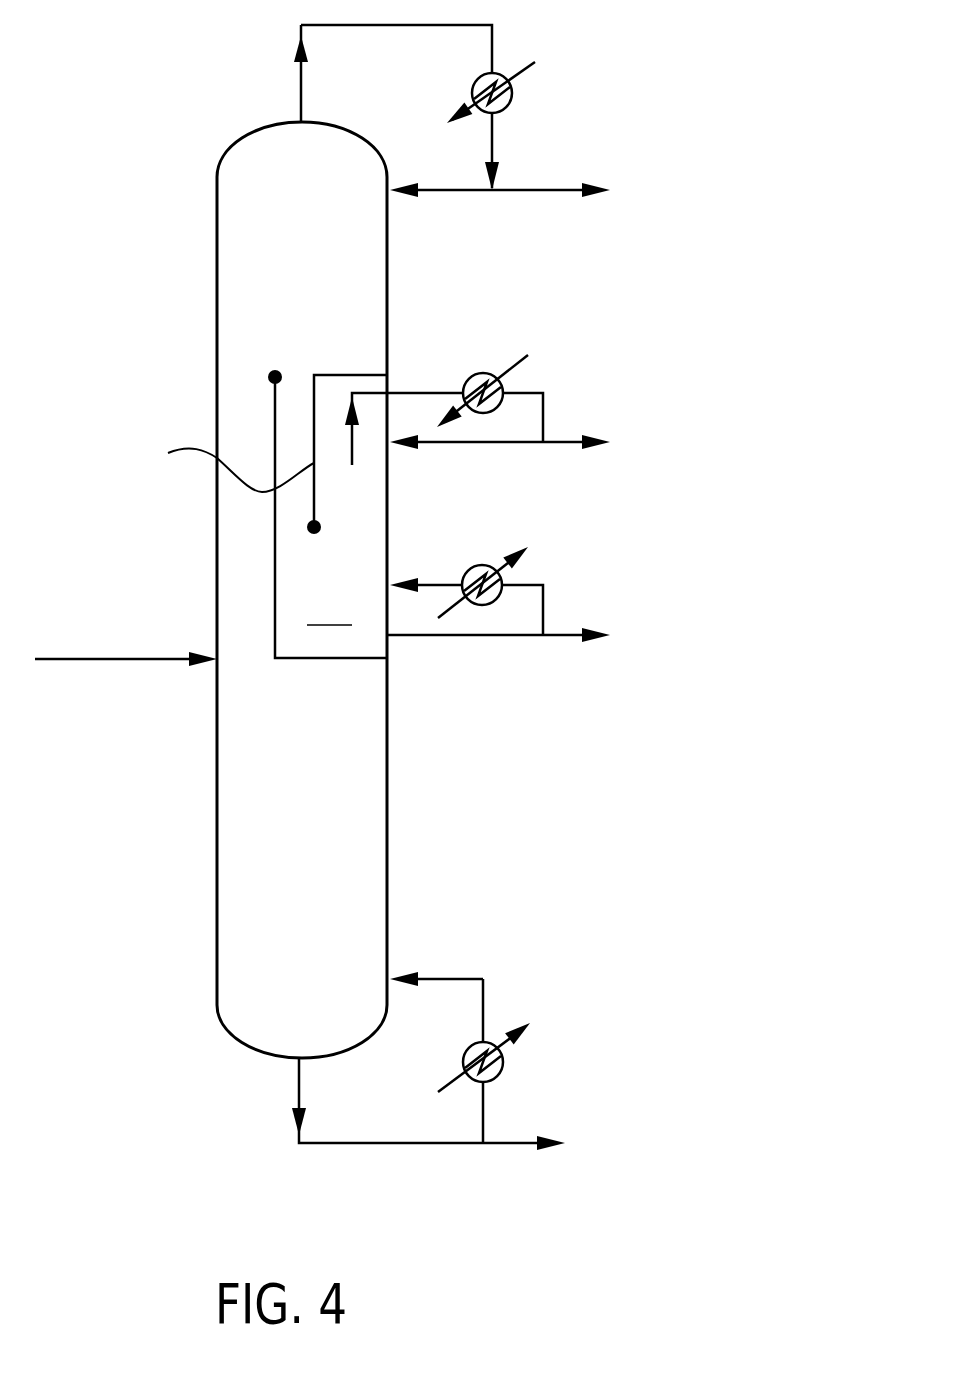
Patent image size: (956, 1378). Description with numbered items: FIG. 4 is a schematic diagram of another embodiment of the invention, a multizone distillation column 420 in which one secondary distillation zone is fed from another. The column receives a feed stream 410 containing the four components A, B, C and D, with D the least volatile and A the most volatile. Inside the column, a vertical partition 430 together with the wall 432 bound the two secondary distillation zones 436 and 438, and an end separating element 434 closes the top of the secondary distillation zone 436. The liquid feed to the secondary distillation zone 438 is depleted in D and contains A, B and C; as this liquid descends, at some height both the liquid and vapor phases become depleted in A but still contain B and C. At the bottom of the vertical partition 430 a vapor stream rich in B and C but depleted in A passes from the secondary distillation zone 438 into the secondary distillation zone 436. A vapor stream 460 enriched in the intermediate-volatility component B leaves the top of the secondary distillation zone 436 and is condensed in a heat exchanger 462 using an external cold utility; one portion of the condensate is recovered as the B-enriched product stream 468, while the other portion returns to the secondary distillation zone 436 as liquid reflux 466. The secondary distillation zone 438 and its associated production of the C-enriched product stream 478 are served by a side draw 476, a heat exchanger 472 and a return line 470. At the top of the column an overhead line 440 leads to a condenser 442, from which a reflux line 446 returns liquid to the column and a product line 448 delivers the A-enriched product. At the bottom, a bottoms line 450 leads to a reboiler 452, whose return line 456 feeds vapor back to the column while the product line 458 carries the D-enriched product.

The feed stream ABCD 410 is at (137, 662).
The multizone distillation column 420 is at (216, 330).
The vertical partition 430 is at (217, 466).
The first dividing wall 432 is at (275, 602).
The end separating element 434 is at (347, 375).
The secondary distillation zone 436 is at (375, 516).
The secondary distillation zone 438 is at (331, 609).
The overhead vapor line 440 is at (300, 88).
The condenser 442 is at (500, 73).
The reflux line 446 is at (447, 192).
The product A line 448 is at (540, 189).
The bottoms line 450 is at (298, 1085).
The reboiler 452 is at (505, 1065).
The reboiler return line 456 is at (445, 978).
The product D line 458 is at (510, 1145).
The vapor stream 460 is at (420, 393).
The heat exchanger 462 is at (487, 375).
The liquid reflux 466 is at (492, 443).
The B-enriched product stream 468 is at (562, 443).
The side return line 470 is at (433, 583).
The side reboiler 472 is at (487, 567).
The side liquid draw line 476 is at (438, 637).
The C-enriched product stream 478 is at (572, 637).